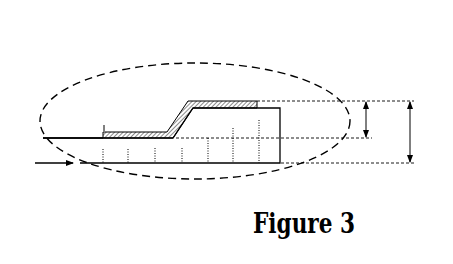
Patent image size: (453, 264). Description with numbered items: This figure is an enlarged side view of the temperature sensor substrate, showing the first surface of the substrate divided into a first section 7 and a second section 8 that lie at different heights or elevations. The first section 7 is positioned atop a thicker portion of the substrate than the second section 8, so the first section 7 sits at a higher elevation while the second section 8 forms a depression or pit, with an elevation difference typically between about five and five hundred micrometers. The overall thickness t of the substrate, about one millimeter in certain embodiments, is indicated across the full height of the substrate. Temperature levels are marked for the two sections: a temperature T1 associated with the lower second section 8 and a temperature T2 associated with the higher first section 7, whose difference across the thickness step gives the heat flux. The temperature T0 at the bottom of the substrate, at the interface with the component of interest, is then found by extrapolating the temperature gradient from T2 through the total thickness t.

The first section 7 is at (212, 100).
The second section 8 is at (135, 132).
The interface temperature T0 is at (40, 165).
The lower section temperature T1 is at (75, 121).
The upper section temperature T2 is at (332, 87).
The substrate thickness t is at (416, 132).